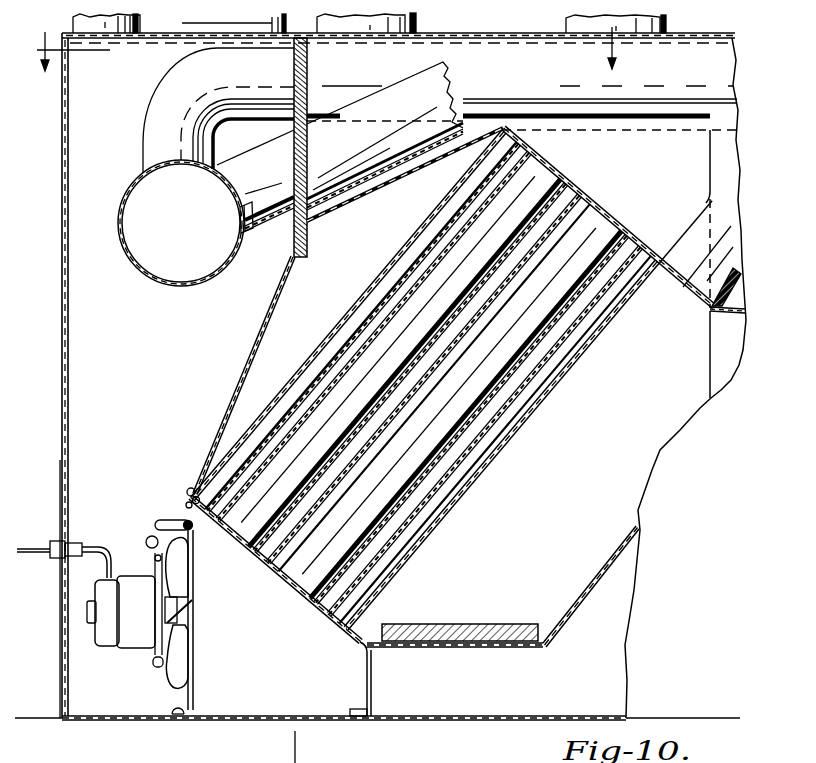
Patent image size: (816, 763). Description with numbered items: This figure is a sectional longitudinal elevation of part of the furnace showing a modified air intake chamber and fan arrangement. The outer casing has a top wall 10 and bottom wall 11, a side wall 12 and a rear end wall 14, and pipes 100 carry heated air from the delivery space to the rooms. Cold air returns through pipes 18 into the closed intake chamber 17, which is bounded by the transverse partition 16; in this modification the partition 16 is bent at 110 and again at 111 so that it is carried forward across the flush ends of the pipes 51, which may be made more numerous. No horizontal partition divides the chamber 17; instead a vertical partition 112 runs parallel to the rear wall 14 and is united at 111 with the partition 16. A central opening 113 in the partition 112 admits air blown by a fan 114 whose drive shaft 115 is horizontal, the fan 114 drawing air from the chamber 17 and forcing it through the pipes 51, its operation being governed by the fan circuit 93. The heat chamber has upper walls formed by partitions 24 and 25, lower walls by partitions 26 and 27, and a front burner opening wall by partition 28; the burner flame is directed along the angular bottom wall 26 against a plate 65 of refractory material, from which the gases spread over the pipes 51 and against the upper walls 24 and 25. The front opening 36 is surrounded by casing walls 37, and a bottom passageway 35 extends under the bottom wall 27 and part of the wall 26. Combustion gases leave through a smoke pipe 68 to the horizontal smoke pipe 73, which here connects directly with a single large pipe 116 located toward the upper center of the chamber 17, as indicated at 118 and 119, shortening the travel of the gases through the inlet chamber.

The top wall 10 is at (499, 36).
The bottom wall 11 is at (320, 728).
The side wall 12 is at (98, 762).
The end wall 14 is at (67, 399).
The transverse partition 16 is at (247, 364).
The intake chamber 17 is at (87, 362).
The pipes 18 is at (140, 23).
The partition 24 is at (362, 190).
The partition 25 is at (691, 292).
The partition 26 is at (562, 618).
The partition 27 is at (484, 648).
The partition 28 is at (711, 342).
The bottom passageway 35 is at (536, 706).
The opening 36 is at (721, 324).
The casing walls 37 is at (741, 300).
The pipes 51 is at (389, 377).
The plate 65 is at (452, 633).
The smoke pipe 68 is at (685, 231).
The smoke pipe 73 is at (577, 93).
The fan circuit 93 is at (32, 547).
The pipes 100 is at (417, 23).
The bend 110 is at (300, 246).
The bend 111 is at (188, 502).
The vertical partition 112 is at (194, 704).
The central opening 113 is at (194, 626).
The fan 114 is at (182, 661).
The drive shaft 115 is at (193, 600).
The pipe 116 is at (200, 284).
The connection 118 is at (157, 162).
The connection 119 is at (250, 233).